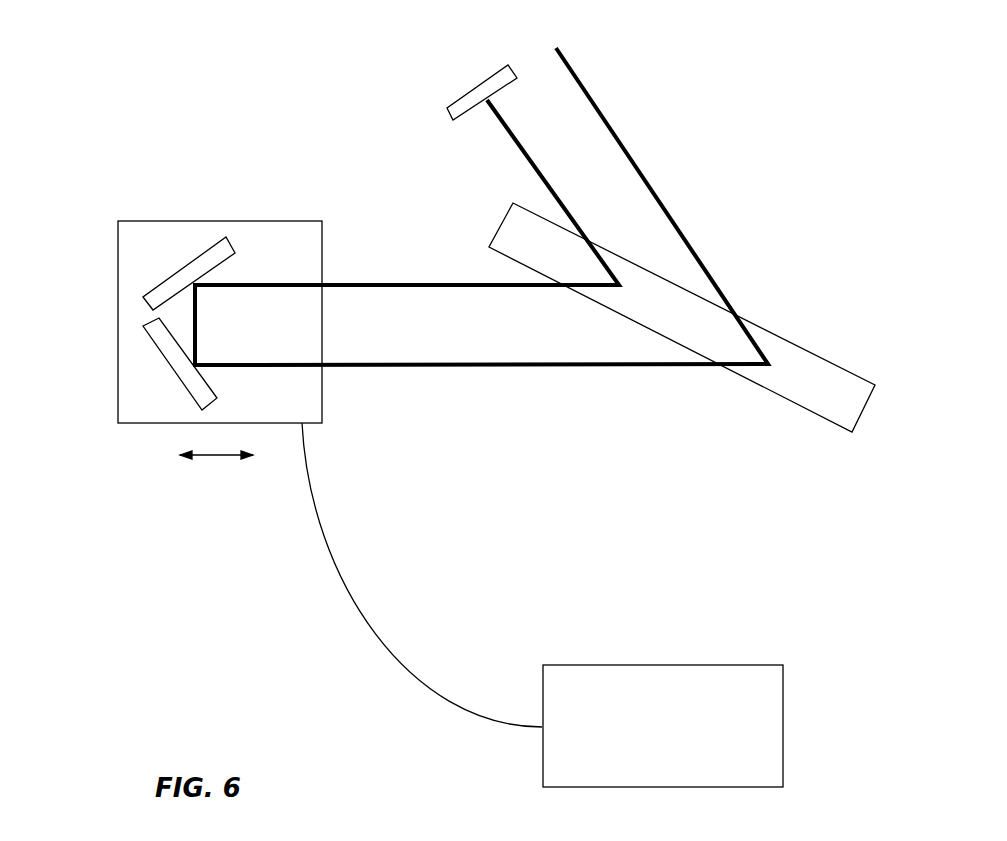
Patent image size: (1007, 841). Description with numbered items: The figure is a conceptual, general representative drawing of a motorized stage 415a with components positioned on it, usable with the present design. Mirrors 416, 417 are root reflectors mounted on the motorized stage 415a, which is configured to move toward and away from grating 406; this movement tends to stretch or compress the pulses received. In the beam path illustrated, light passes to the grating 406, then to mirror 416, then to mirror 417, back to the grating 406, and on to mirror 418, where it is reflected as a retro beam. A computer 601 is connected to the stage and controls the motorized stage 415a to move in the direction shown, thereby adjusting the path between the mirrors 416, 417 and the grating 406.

The grating 406 is at (696, 322).
The motorized stage 415a is at (135, 425).
The mirror 416 is at (216, 256).
The mirror 417 is at (165, 346).
The mirror 418 is at (465, 90).
The computer 601 is at (663, 726).